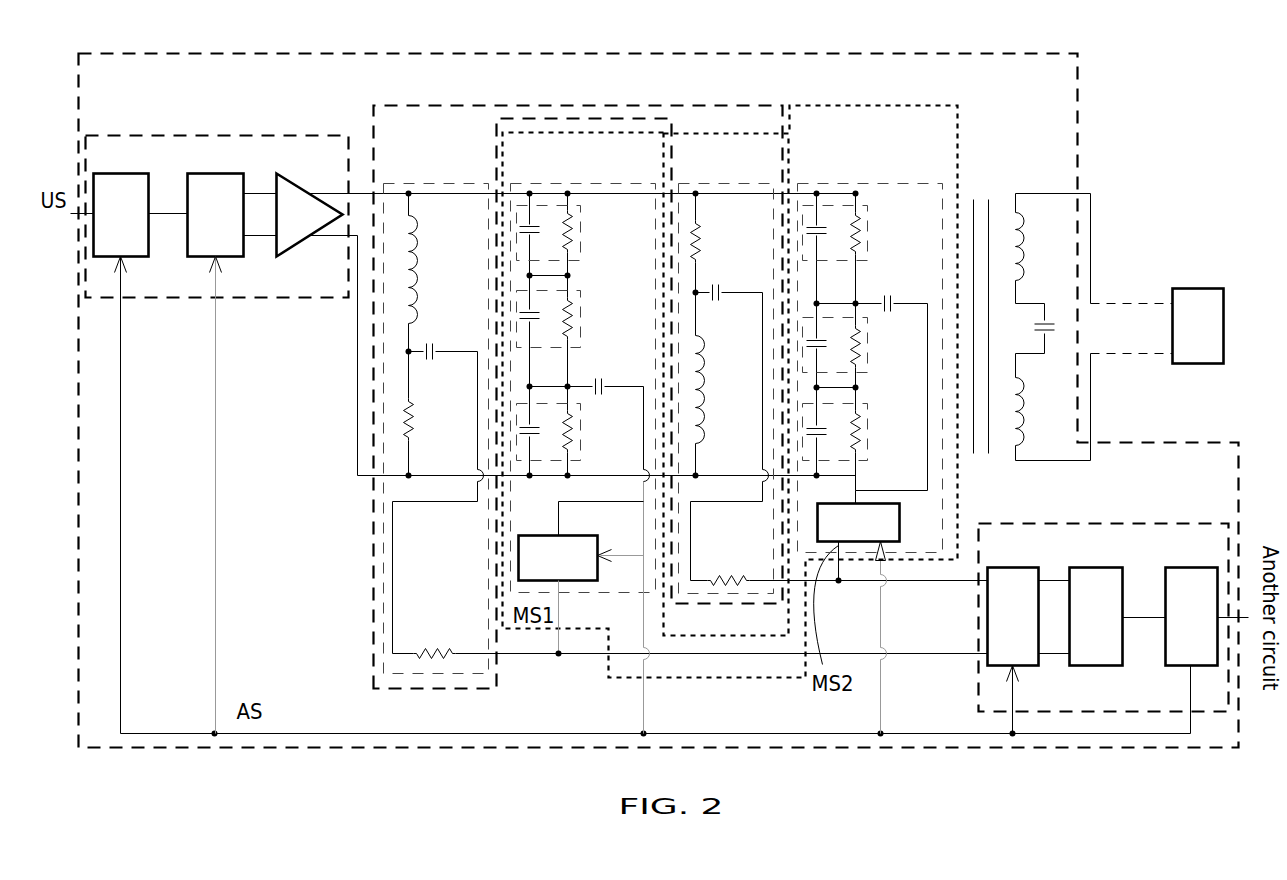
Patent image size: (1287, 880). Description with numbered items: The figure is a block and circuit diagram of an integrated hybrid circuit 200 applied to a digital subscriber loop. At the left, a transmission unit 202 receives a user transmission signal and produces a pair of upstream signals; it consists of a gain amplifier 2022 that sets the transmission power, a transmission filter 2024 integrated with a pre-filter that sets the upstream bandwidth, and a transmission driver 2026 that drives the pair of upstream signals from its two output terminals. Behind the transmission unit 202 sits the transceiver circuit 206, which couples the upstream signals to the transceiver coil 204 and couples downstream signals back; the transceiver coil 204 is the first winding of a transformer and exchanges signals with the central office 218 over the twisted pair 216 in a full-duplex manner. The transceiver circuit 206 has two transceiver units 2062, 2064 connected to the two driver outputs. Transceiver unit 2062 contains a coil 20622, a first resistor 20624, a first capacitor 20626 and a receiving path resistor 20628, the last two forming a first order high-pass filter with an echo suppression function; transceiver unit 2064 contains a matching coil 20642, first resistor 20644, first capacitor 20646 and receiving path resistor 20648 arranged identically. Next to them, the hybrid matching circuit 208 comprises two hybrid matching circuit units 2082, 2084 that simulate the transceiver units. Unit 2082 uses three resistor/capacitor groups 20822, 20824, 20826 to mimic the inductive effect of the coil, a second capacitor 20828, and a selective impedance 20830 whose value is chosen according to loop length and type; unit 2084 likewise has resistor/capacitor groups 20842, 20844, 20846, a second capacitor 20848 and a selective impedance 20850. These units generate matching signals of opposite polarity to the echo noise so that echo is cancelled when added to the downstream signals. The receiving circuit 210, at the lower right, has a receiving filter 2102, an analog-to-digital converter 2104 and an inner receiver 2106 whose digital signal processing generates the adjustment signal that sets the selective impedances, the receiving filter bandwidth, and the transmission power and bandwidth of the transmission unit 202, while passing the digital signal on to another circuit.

The integrated hybrid circuit 200 is at (1077, 97).
The transmission unit 202 is at (217, 411).
The gain amplifier 2022 is at (143, 227).
The transmission filter 2024 is at (237, 227).
The transmission driver 2026 is at (324, 227).
The transceiver coil 204 is at (1053, 327).
The transceiver circuit 206 is at (681, 375).
The transceiver unit 2062 is at (686, 405).
The coil 20622 is at (443, 270).
The first resistor 20624 is at (438, 414).
The first capacitor 20626 is at (443, 333).
The receiving path resistor 20628 is at (698, 628).
The transceiver unit 2064 is at (826, 385).
The coil 20642 is at (729, 384).
The first resistor 20644 is at (725, 243).
The first capacitor 20646 is at (730, 275).
The receiving path resistor 20648 is at (846, 557).
The hybrid matching circuit 208 is at (730, 397).
The hybrid matching circuit unit 2082 is at (583, 435).
The resistor/capacitor group 20822 is at (579, 233).
The resistor/capacitor group 20824 is at (579, 319).
The resistor/capacitor group 20826 is at (579, 432).
The second capacitor 20828 is at (613, 369).
The selective impedance 20830 is at (586, 572).
The hybrid matching circuit unit 2084 is at (870, 435).
The resistor/capacitor group 20842 is at (865, 233).
The resistor/capacitor group 20844 is at (865, 345).
The resistor/capacitor group 20846 is at (865, 432).
The second capacitor 20848 is at (900, 285).
The selective impedance 20850 is at (888, 534).
The receiving circuit 210 is at (1114, 606).
The receiving filter 2102 is at (1035, 628).
The analog-to-digital converter 2104 is at (1117, 628).
The inner receiver 2106 is at (1213, 628).
The twisted pair 216 is at (1132, 331).
The central office 218 is at (1215, 336).